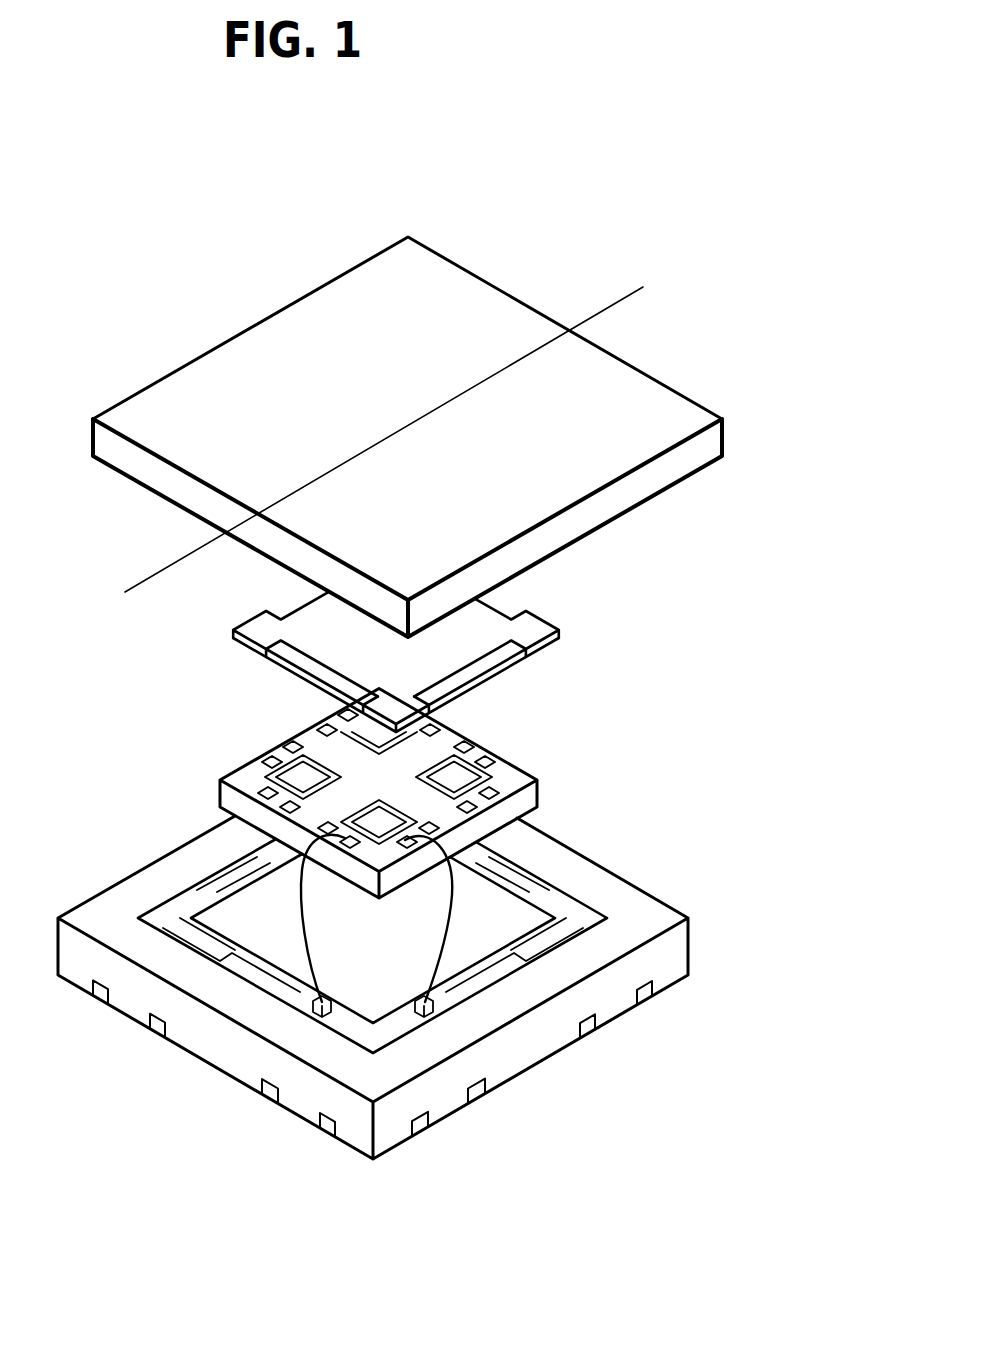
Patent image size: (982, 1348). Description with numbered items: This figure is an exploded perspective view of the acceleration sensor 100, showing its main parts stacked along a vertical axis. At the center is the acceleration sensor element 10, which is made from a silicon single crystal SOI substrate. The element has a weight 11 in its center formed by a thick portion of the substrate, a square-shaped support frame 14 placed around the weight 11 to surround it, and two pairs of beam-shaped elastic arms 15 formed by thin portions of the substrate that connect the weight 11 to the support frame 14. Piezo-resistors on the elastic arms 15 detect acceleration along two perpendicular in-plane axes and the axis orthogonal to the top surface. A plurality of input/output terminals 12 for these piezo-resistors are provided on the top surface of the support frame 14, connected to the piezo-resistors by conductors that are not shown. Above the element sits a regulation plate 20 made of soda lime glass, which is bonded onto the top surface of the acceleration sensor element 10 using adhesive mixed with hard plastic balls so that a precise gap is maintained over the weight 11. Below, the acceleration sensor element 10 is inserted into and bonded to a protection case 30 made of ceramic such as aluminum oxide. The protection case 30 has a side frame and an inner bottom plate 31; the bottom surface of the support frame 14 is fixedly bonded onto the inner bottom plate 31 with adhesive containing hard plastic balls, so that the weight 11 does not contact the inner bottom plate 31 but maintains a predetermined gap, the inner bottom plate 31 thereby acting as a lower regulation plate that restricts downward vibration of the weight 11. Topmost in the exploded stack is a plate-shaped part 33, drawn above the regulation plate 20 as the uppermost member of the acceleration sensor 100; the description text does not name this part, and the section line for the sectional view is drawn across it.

The acceleration sensor 100 is at (127, 275).
The acceleration sensor element 10 is at (389, 790).
The weight 11 is at (370, 783).
The input/output terminals 12 is at (485, 800).
The support frame 14 is at (490, 768).
The elastic arms 15 is at (518, 863).
The regulation plate 20 is at (564, 635).
The protection case 30 is at (463, 977).
The inner bottom plate 31 is at (267, 930).
The lid 33 is at (637, 421).